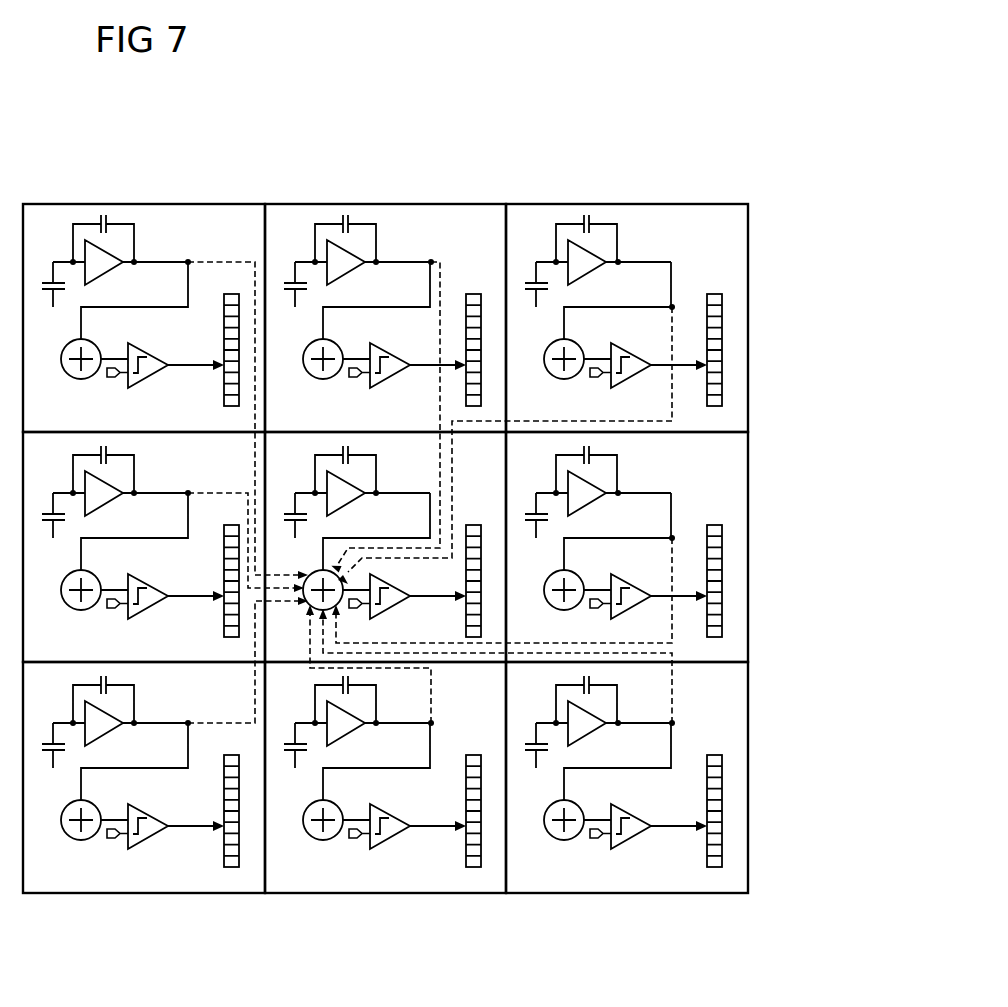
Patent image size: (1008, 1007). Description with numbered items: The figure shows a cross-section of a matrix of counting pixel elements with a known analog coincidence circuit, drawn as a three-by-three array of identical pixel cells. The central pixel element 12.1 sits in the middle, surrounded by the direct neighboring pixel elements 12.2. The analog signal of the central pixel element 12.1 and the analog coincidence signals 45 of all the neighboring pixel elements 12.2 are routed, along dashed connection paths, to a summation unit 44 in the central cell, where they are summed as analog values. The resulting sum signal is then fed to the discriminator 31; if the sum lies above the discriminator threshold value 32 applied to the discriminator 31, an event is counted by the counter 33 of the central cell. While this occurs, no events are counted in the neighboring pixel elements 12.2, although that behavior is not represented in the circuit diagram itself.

The central pixel element 12.1 is at (453, 658).
The neighboring pixel elements 12.2 is at (148, 203).
The discriminator 31 is at (397, 605).
The discriminator threshold value 32 is at (355, 608).
The counter register 33 is at (477, 524).
The summation unit 44 is at (315, 572).
The analog coincidence signals 45 is at (217, 258).